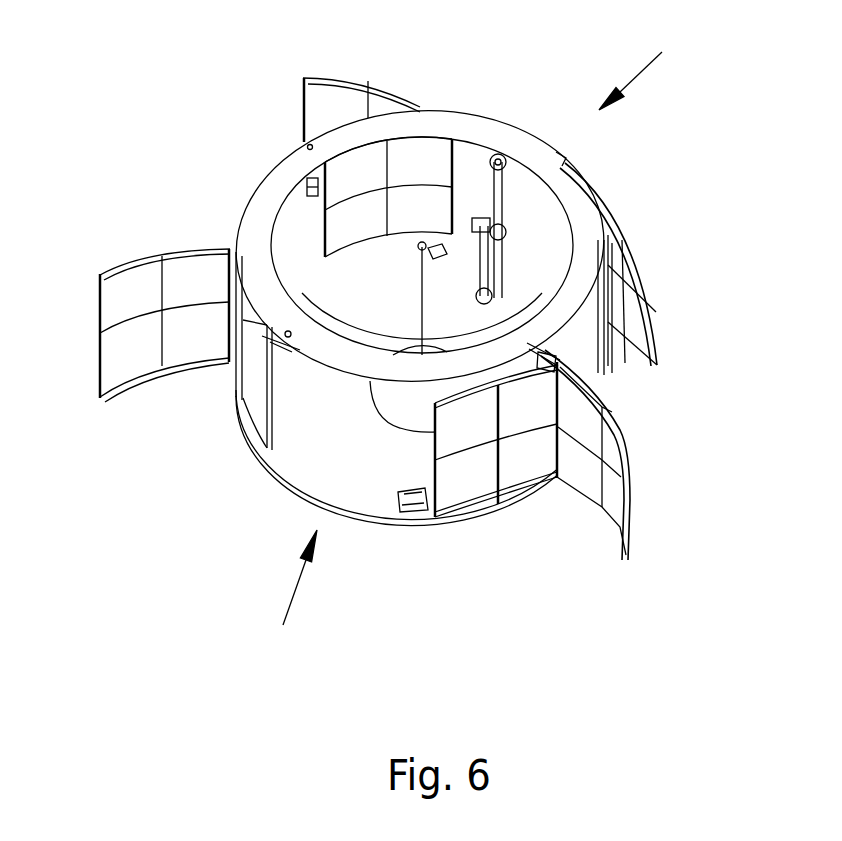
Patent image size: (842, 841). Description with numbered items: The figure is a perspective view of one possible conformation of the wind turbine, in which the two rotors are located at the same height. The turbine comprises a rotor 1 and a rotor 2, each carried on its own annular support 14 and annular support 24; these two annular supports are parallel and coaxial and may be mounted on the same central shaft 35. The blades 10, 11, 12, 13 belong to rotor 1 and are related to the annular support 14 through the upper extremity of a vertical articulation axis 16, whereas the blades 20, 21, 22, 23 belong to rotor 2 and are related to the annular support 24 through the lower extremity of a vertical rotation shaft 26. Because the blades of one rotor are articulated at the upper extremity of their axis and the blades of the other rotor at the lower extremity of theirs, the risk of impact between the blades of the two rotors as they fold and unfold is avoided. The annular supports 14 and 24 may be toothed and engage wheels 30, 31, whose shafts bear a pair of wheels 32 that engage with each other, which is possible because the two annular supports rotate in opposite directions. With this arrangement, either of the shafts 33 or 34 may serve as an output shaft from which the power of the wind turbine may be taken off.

The rotor 1 is at (641, 67).
The rotor 2 is at (284, 593).
The blade 10 is at (625, 490).
The blade 11 is at (655, 305).
The blade 12 is at (322, 222).
The blade 13 is at (258, 426).
The annular support 14 is at (541, 146).
The vertical articulation axis 16 is at (310, 147).
The blade 20 is at (525, 495).
The blade 21 is at (617, 345).
The blade 22 is at (357, 80).
The blade 23 is at (143, 256).
The annular support 24 is at (298, 470).
The vertical rotation shaft 26 is at (420, 252).
The wheel 30 is at (499, 152).
The wheel 31 is at (478, 302).
The pair of wheels 32 is at (508, 228).
The shaft 33 is at (492, 156).
The shaft 34 is at (505, 254).
The central shaft 35 is at (428, 340).